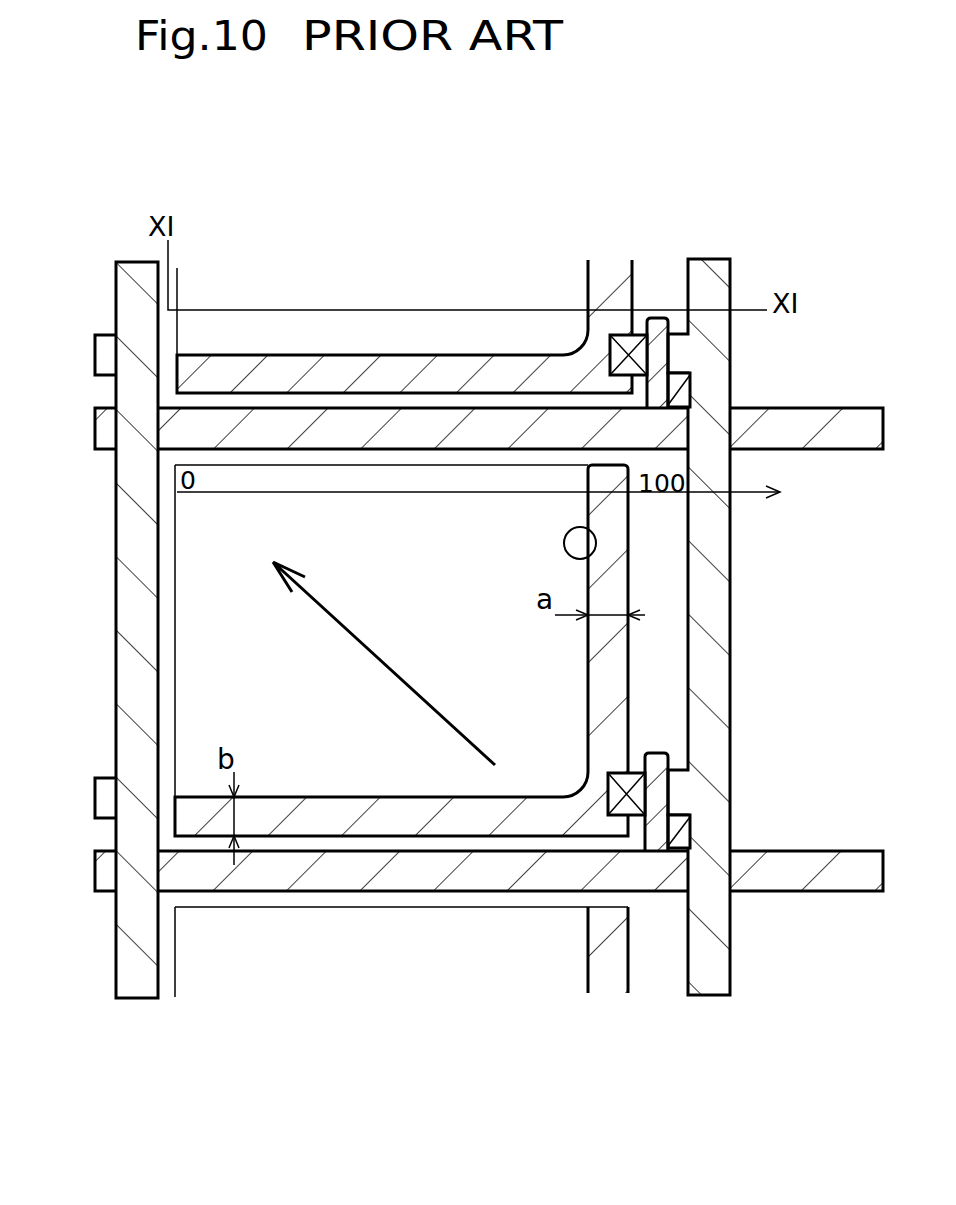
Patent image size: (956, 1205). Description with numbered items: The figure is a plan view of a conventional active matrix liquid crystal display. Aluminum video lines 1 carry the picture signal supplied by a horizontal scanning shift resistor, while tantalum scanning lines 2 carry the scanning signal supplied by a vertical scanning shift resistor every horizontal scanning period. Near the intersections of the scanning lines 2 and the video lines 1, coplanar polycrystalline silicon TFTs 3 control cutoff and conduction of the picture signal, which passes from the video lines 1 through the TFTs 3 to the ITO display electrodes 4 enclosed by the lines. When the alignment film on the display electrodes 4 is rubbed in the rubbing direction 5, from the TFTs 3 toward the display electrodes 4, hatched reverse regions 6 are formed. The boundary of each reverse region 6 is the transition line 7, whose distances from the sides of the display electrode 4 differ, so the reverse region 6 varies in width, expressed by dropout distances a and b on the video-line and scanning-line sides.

The video line 1 is at (145, 262).
The scanning line 2 is at (785, 408).
The coplanar TFT 3 is at (688, 747).
The display electrode 4 is at (181, 326).
The rubbing direction 5 is at (360, 650).
The reverse region 6 is at (305, 355).
The transition line 7 is at (590, 528).